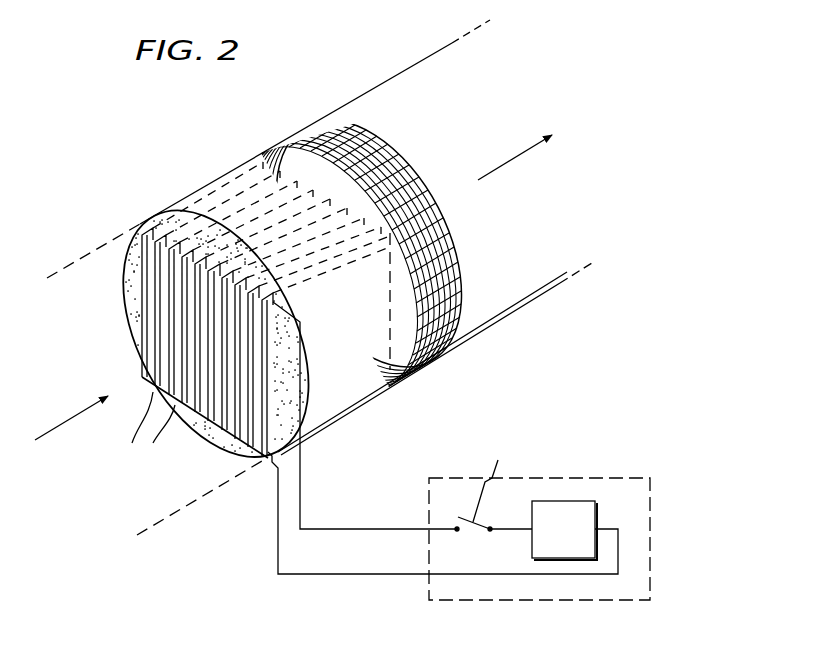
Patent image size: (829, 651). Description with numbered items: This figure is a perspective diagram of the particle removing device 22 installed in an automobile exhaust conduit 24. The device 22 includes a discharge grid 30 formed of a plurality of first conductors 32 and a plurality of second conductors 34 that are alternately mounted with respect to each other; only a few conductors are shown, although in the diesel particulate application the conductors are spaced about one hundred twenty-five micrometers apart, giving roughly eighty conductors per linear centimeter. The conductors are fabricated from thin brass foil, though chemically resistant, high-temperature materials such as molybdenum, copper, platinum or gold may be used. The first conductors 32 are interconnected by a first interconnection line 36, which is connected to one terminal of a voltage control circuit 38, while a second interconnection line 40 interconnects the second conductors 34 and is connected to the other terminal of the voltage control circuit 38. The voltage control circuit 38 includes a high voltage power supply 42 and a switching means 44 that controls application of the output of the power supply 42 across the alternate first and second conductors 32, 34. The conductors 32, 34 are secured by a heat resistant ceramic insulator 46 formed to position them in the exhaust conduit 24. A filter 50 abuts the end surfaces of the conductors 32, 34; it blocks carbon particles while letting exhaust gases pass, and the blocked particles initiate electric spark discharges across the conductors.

The particle removing device 22 is at (240, 163).
The exhaust conduit 24 is at (456, 41).
The discharge grid 30 is at (163, 212).
The first conductors 32 is at (223, 207).
The second conductors 34 is at (145, 435).
The first interconnection line 36 is at (300, 503).
The voltage control circuit 38 is at (403, 627).
The second interconnection line 40 is at (278, 548).
The high voltage power supply 42 is at (532, 549).
The switching means 44 is at (680, 458).
The ceramic insulator 46 is at (123, 334).
The filter 50 is at (323, 123).